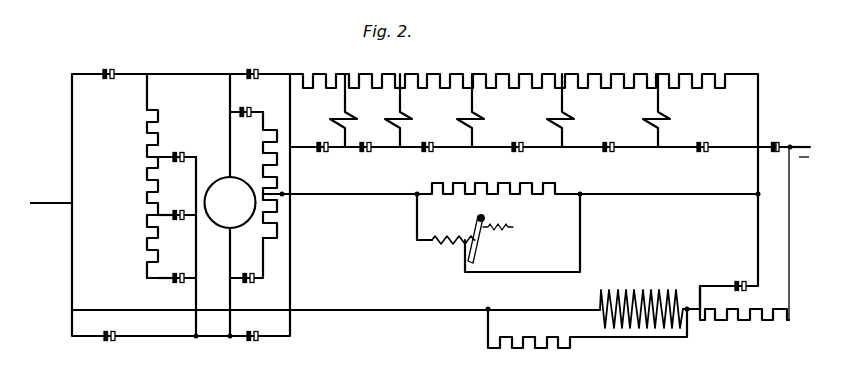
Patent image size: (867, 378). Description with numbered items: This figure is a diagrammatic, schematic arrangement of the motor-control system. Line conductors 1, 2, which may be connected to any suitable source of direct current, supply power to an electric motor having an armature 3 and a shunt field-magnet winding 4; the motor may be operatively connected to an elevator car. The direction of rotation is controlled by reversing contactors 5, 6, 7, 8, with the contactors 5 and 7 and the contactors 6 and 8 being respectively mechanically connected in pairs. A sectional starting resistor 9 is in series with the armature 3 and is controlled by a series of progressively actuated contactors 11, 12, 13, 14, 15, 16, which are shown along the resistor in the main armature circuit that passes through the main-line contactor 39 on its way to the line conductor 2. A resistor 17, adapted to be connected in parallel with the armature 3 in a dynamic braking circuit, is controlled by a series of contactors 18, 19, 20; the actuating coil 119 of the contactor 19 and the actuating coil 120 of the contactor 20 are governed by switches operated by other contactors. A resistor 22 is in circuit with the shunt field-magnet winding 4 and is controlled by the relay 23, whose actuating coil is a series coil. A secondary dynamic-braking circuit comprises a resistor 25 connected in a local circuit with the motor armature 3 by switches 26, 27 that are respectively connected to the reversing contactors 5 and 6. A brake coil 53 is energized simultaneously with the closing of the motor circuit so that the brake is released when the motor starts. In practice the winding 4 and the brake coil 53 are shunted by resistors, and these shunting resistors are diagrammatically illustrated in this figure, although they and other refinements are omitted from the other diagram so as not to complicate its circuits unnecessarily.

The line conductor 1 is at (42, 203).
The line conductor 2 is at (804, 148).
The armature 3 is at (237, 181).
The shunt field-magnet winding 4 is at (651, 297).
The reversing contactor 5 is at (255, 71).
The reversing contactor 6 is at (110, 71).
The reversing contactor 7 is at (120, 333).
The reversing contactor 8 is at (270, 324).
The sectional starting resistor 9 is at (514, 73).
The contactor 11 is at (696, 152).
The contactor 12 is at (605, 152).
The contactor 13 is at (513, 152).
The contactor 14 is at (420, 152).
The contactor 15 is at (360, 152).
The contactor 16 is at (316, 152).
The resistor 17 is at (146, 223).
The contactor 18 is at (176, 276).
The contactor 19 is at (181, 213).
The contactor 20 is at (179, 156).
The resistor 22 is at (752, 322).
The relay 23 is at (739, 281).
The resistor 25 is at (256, 182).
The switch 26 is at (250, 108).
The switch 27 is at (250, 269).
The main-line contactor 39 is at (775, 143).
The brake coil 53 is at (472, 237).
The actuating coil 119 is at (170, 281).
The actuating coil 120 is at (167, 213).